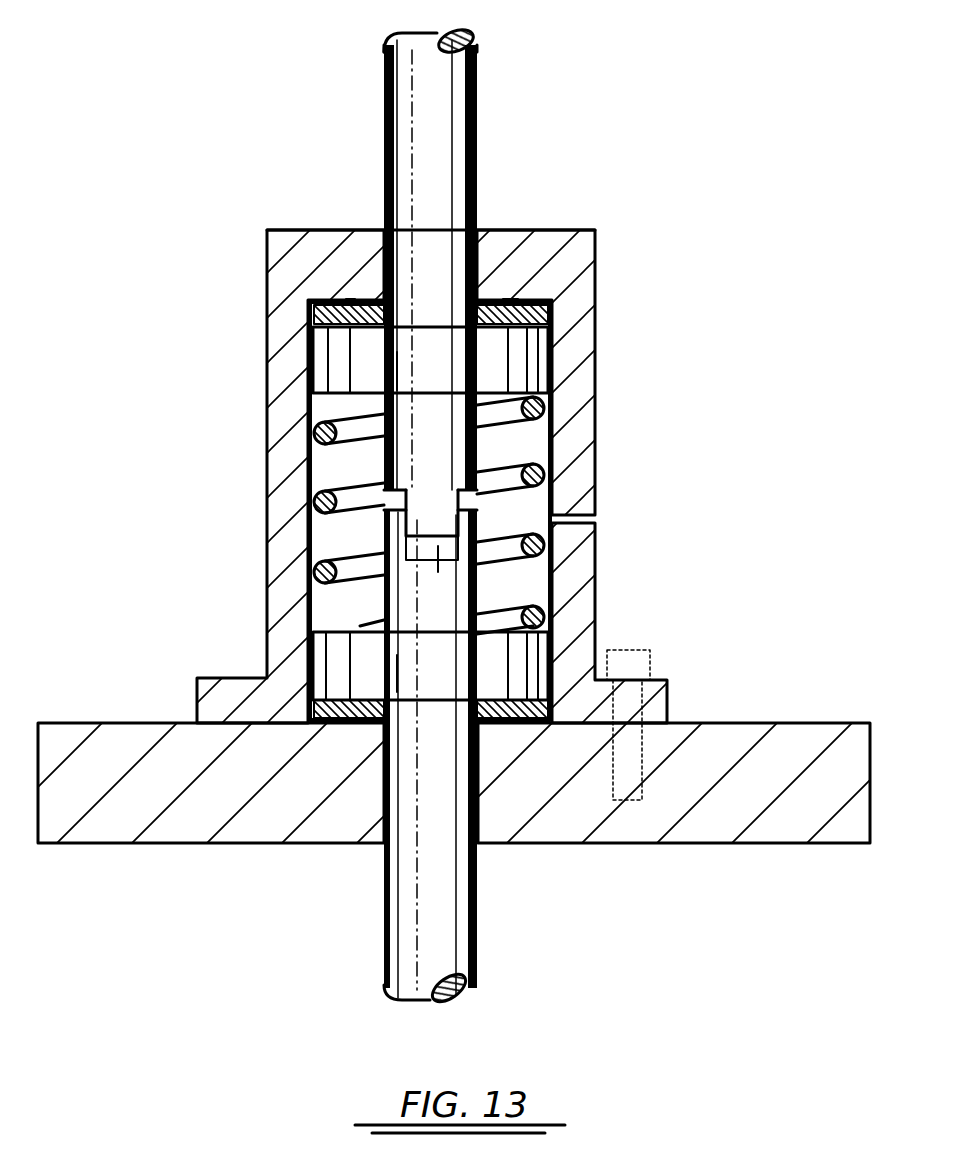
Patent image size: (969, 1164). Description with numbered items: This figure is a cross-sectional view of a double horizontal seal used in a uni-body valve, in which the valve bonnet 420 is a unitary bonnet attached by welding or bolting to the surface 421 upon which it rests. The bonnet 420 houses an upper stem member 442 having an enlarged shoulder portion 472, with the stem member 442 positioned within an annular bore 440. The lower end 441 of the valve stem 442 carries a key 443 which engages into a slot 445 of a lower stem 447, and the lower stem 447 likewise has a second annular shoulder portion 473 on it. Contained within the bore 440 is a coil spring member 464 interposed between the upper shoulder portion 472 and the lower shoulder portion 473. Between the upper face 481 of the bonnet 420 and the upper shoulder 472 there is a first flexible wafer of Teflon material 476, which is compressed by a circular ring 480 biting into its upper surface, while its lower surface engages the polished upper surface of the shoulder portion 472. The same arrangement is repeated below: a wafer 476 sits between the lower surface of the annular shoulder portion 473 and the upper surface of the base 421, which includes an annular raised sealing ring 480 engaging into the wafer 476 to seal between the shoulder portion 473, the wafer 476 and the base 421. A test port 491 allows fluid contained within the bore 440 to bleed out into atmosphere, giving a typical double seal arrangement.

The valve bonnet 420 is at (580, 333).
The surface (base) 421 is at (110, 722).
The annular bore 440 is at (345, 466).
The lower end 441 is at (442, 447).
The upper stem member 442 is at (442, 117).
The key 443 is at (383, 522).
The slot 445 is at (438, 547).
The lower stem 447 is at (418, 885).
The coil spring member 464 is at (312, 430).
The enlarged shoulder portion 472 is at (338, 362).
The second annular shoulder portion 473 is at (340, 657).
The flexible wafer 476 is at (312, 312).
The circular ring 480 is at (350, 298).
The upper face 481 is at (318, 240).
The test port 491 is at (595, 522).